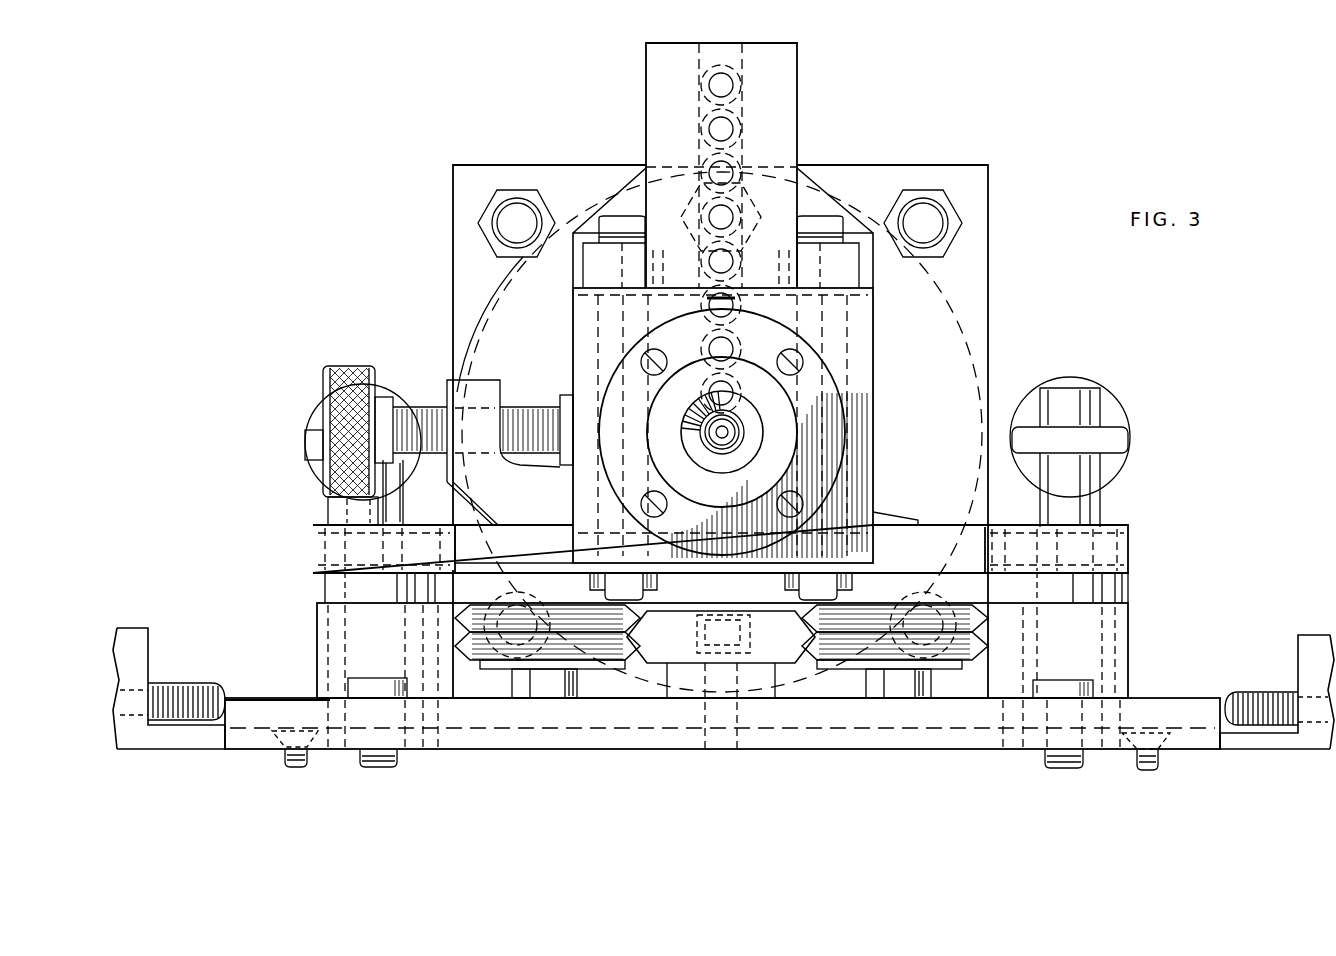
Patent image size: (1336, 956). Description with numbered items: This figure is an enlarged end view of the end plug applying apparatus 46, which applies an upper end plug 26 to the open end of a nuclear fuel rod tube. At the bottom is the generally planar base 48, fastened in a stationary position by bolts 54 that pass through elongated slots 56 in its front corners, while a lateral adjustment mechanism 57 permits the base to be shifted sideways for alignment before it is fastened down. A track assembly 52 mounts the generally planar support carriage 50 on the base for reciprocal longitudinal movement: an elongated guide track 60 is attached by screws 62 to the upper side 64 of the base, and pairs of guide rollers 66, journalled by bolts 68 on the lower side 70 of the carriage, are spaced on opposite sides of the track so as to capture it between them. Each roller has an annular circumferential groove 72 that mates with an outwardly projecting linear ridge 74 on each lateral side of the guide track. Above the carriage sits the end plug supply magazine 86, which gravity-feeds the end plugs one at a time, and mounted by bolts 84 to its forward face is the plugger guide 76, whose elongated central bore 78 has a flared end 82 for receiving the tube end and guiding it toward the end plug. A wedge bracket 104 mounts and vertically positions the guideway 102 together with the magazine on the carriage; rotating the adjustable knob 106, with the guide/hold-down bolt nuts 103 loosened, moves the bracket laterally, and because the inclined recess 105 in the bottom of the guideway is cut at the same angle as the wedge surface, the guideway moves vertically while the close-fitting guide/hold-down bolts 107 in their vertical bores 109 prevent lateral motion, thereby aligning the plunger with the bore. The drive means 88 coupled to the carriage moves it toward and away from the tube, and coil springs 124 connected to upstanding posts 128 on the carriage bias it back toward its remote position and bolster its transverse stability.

The upper end plug 26 is at (742, 96).
The end plug applying apparatus 46 is at (972, 124).
The base 48 is at (876, 752).
The support carriage 50 is at (1136, 547).
The track assembly 52 is at (634, 692).
The bolts 54 is at (398, 762).
The elongated slots 56 is at (344, 755).
The lateral adjustment mechanism 57 is at (162, 755).
The guide track 60 is at (663, 611).
The screws 62 is at (716, 750).
The upper side of the base 64 is at (275, 697).
The guide rollers 66 is at (458, 660).
The bolts 68 is at (512, 682).
The lower side of the carriage 70 is at (492, 582).
The annular circumferential groove 72 is at (462, 618).
The linear ridge 74 is at (623, 670).
The plugger guide 76 is at (641, 405).
The central bore 78 is at (733, 446).
The flared end 82 is at (740, 428).
The bolts 84 is at (542, 210).
The end plug supply magazine 86 is at (803, 75).
The drive means 88 is at (950, 290).
The guideway 102 is at (566, 315).
The guide/hold-down bolt nuts 103 is at (580, 266).
The wedge bracket 104 is at (470, 380).
The inclined recess 105 is at (572, 497).
The adjustable knob 106 is at (350, 364).
The guide/hold-down bolts 107 is at (614, 217).
The vertical bores 109 is at (491, 313).
The coil springs 124 is at (310, 425).
The upstanding posts 128 is at (328, 510).